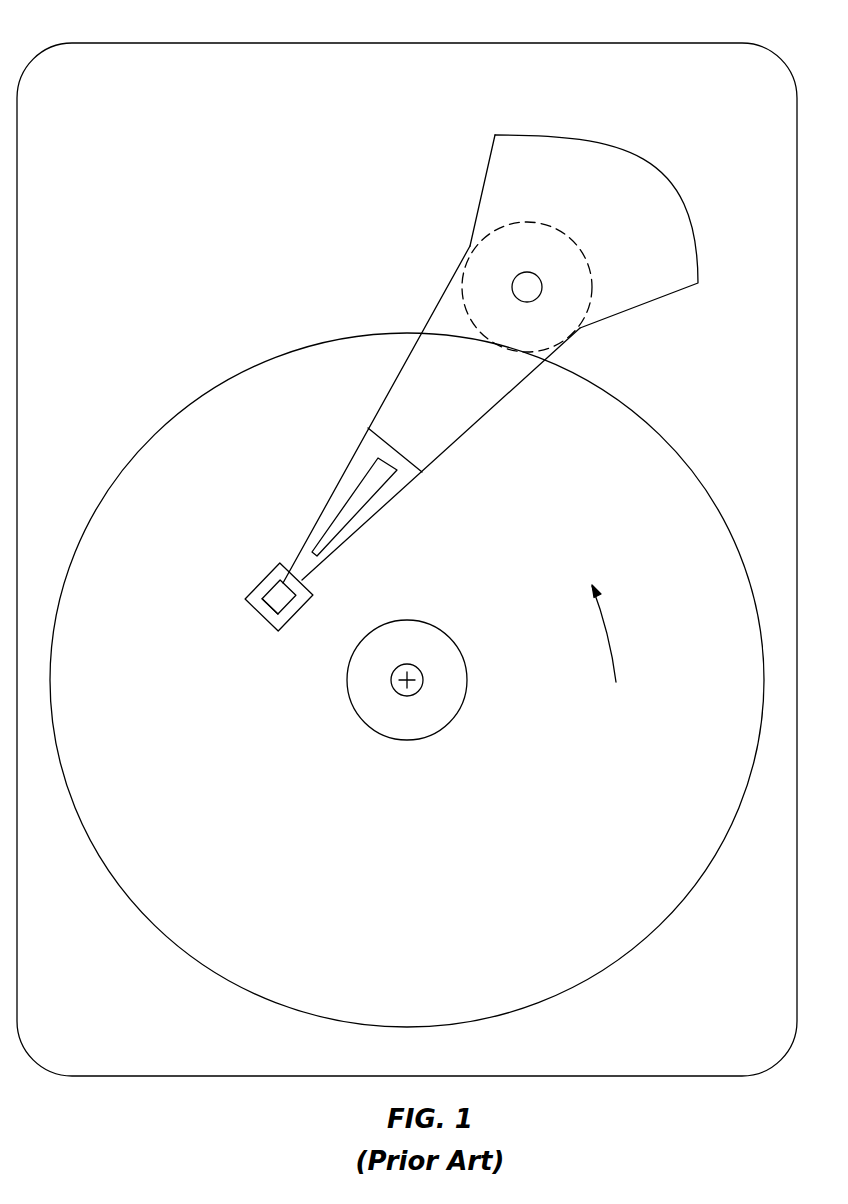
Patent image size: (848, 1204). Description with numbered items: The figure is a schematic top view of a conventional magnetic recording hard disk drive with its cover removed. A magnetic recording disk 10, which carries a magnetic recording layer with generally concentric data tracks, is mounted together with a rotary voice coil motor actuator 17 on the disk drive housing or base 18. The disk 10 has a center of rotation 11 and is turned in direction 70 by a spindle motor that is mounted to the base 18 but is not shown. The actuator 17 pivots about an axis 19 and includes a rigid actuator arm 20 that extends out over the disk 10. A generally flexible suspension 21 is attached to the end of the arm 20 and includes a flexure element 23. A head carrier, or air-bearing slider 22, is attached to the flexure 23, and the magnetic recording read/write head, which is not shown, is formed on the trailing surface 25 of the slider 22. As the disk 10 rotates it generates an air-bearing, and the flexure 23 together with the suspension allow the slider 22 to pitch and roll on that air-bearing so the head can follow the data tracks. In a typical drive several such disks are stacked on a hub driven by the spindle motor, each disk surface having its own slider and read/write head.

The magnetic recording disk 10 is at (632, 943).
The center of rotation 11 is at (423, 673).
The rotary voice coil motor actuator 17 is at (633, 160).
The disk drive housing or base 18 is at (673, 43).
The axis 19 is at (512, 287).
The rigid actuator arm 20 is at (404, 381).
The suspension 21 is at (358, 464).
The air-bearing slider 22 is at (266, 571).
The flexure element 23 is at (289, 598).
The trailing surface 25 is at (248, 613).
The direction 70 is at (613, 648).